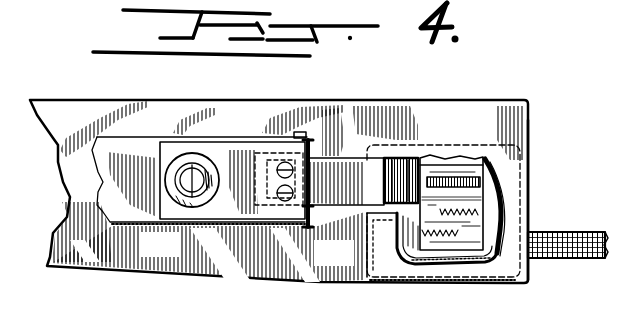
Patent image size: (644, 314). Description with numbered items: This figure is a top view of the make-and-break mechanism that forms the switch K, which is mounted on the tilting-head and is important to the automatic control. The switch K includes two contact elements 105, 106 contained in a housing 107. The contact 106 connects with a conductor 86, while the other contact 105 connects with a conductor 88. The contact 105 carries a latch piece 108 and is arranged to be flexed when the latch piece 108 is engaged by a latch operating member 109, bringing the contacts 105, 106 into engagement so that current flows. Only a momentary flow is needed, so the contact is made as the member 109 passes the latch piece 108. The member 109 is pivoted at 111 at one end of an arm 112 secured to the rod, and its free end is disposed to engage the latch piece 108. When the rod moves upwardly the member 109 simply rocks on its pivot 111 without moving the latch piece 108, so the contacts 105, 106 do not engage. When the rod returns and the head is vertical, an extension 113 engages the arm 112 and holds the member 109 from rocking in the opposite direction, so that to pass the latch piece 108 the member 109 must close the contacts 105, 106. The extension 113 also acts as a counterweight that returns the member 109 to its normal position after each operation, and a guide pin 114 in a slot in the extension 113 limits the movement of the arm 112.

The arm 112 is at (135, 155).
The extension 113 is at (230, 157).
The guide pin 114 is at (192, 174).
The pivot 111 is at (298, 134).
The latch operating member 109 is at (345, 198).
The housing 107 is at (513, 163).
The latch piece 108 is at (402, 157).
The contact element 106 is at (457, 182).
The contact element 105 is at (423, 170).
The conductor 86 is at (507, 230).
The conductor 88 is at (442, 262).
The switch K is at (530, 182).